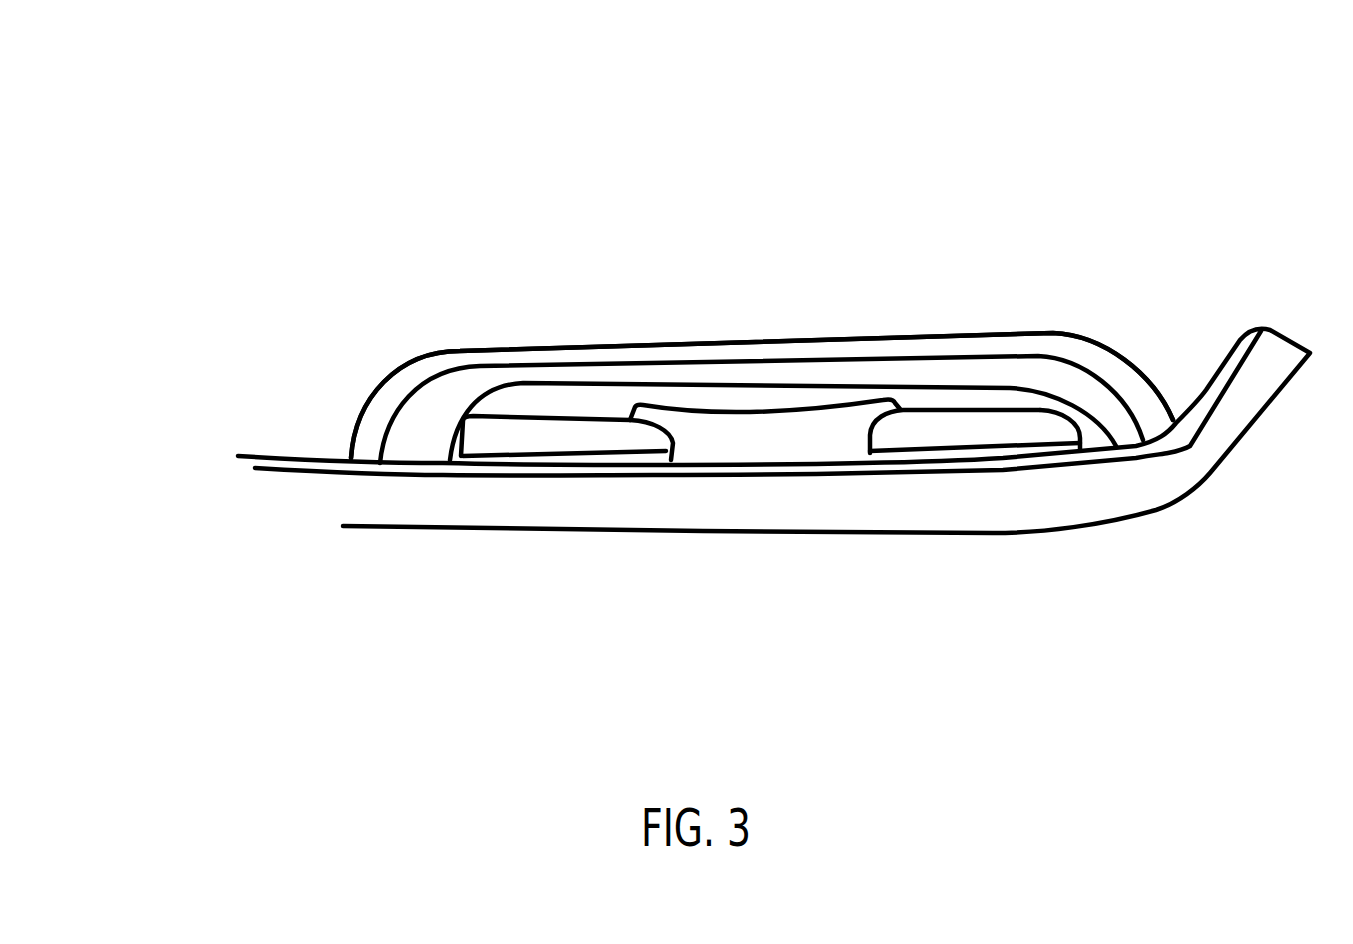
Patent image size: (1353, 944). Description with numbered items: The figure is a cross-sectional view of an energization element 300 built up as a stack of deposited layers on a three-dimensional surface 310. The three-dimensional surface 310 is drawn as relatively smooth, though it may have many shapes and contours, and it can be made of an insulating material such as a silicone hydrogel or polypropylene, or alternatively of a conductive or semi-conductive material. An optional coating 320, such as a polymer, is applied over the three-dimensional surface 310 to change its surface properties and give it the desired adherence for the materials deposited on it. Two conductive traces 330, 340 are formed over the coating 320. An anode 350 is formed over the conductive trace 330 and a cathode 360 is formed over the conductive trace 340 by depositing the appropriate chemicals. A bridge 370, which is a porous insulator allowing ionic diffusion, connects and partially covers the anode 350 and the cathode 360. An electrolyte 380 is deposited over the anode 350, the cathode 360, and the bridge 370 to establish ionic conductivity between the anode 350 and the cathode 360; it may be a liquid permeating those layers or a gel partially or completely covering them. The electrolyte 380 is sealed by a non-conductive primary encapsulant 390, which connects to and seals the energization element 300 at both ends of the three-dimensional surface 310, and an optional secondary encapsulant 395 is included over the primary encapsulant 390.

The energization element 300 is at (410, 148).
The three-dimensional surface 310 is at (705, 502).
The coating 320 is at (940, 467).
The conductive trace 330 is at (520, 455).
The conductive trace 340 is at (1000, 453).
The anode 350 is at (515, 432).
The cathode 360 is at (987, 425).
The bridge 370 is at (752, 427).
The electrolyte 380 is at (584, 395).
The primary encapsulant 390 is at (503, 368).
The secondary encapsulant 395 is at (478, 347).